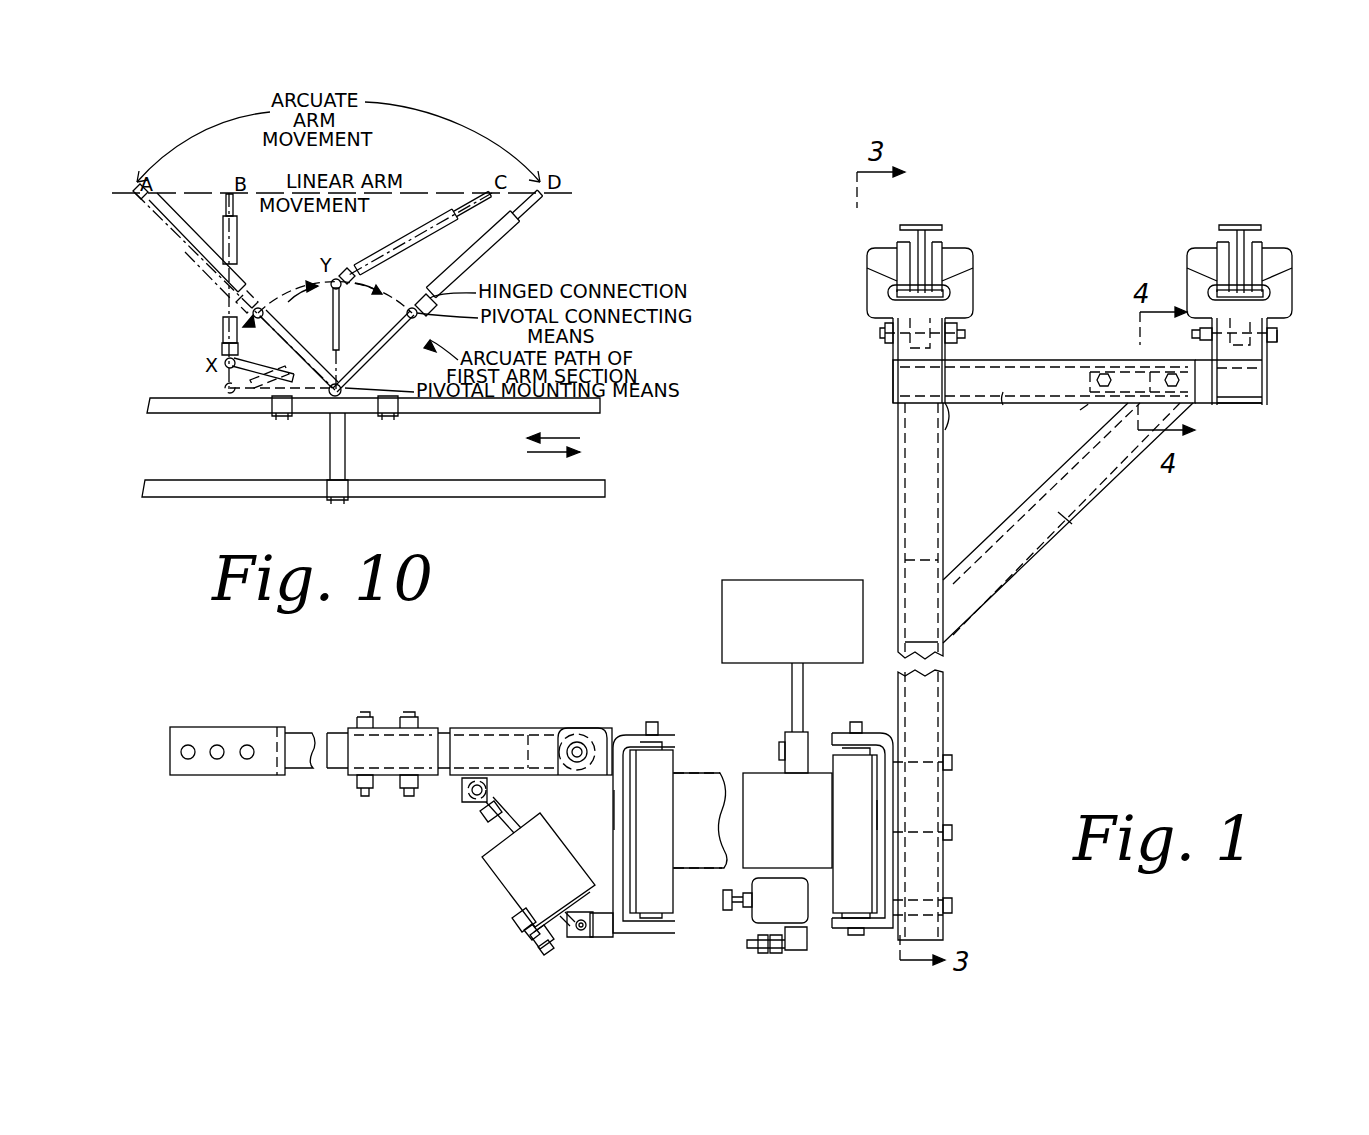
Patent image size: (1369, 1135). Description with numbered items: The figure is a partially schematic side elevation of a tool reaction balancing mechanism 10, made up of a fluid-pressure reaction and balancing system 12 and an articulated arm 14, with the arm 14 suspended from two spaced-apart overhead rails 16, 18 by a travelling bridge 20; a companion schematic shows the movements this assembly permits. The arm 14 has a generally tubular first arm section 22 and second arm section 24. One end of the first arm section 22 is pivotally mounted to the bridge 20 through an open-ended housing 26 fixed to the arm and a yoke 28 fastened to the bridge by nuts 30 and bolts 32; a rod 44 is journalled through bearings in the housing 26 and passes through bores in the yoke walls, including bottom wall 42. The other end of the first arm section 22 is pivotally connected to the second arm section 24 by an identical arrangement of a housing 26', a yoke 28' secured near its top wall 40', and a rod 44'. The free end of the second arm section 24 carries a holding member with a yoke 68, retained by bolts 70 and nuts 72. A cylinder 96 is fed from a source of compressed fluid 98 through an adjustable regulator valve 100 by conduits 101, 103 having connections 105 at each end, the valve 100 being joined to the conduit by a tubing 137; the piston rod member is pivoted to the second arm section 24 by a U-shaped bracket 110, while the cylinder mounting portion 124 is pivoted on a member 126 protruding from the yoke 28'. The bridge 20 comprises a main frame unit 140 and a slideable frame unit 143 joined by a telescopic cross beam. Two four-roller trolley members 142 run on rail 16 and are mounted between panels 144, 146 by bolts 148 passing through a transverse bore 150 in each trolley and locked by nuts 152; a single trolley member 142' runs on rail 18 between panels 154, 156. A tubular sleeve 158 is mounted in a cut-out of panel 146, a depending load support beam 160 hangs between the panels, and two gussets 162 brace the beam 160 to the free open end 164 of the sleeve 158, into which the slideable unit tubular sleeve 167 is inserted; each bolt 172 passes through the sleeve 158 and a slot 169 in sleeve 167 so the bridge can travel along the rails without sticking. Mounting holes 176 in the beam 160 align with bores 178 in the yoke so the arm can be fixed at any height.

In FIG. 1, the tool reaction balancing mechanism 10 is at (692, 606).
In FIG. 1, the fluid-pressure reaction and balancing system 12 is at (412, 874).
In FIG. 10, the articulated arm 14 is at (155, 233).
In FIG. 1, the articulated arm 14 is at (674, 736).
In FIG. 10, the rail 16 is at (580, 402).
In FIG. 1, the rail 16 is at (930, 225).
In FIG. 10, the rail 18 is at (548, 486).
In FIG. 1, the rail 18 is at (1232, 225).
In FIG. 1, the travelling bridge 20 is at (1010, 599).
In FIG. 10, the first arm section 22 is at (322, 340).
In FIG. 1, the first arm section 22 is at (700, 775).
In FIG. 10, the second arm section 24 is at (185, 252).
In FIG. 1, the second arm section 24 is at (505, 728).
In FIG. 1, the housing 26 is at (818, 841).
In FIG. 1, the housing 26' is at (674, 830).
In FIG. 1, the clevis or yoke 28 is at (828, 809).
In FIG. 1, the clevis or yoke 28' is at (583, 808).
In FIG. 1, the nuts 30 is at (945, 892).
In FIG. 1, the bolts 32 is at (955, 762).
In FIG. 1, the top wall 40' is at (627, 801).
In FIG. 1, the bottom wall 42 is at (880, 930).
In FIG. 1, the rod 44 is at (864, 704).
In FIG. 1, the rod 44' is at (648, 692).
In FIG. 1, the yoke 68 is at (252, 732).
In FIG. 1, the bolts 70 is at (408, 717).
In FIG. 1, the nuts 72 is at (400, 790).
In FIG. 1, the cylinder 96 is at (502, 865).
In FIG. 1, the source of compressed fluid 98 is at (810, 588).
In FIG. 1, the adjustable regulator valve 100 is at (760, 918).
In FIG. 1, the conduit 101 is at (792, 684).
In FIG. 1, the conduit 103 is at (528, 950).
In FIG. 1, the connections 105 is at (512, 921).
In FIG. 1, the U-shaped bracket 110 is at (463, 805).
In FIG. 1, the mounting portion 124 is at (566, 930).
In FIG. 1, the member 126 is at (605, 932).
In FIG. 1, the tubing 137 is at (786, 735).
In FIG. 1, the main frame unit 140 is at (898, 439).
In FIG. 10, the trolley members 142 is at (372, 508).
In FIG. 1, the trolley members 142 is at (963, 276).
In FIG. 10, the trolley member 142' is at (346, 431).
In FIG. 1, the trolley member 142' is at (1270, 263).
In FIG. 1, the slideable frame unit 143 is at (1296, 346).
In FIG. 10, the panel 144 is at (345, 445).
In FIG. 1, the panel 144 is at (893, 372).
In FIG. 1, the panel 146 is at (953, 403).
In FIG. 1, the bolts 148 is at (885, 335).
In FIG. 1, the transverse bore 150 is at (898, 348).
In FIG. 1, the nuts 152 is at (957, 330).
In FIG. 1, the panel 154 is at (1215, 360).
In FIG. 1, the panel 156 is at (1267, 380).
In FIG. 1, the tubular sleeve 158 is at (1003, 405).
In FIG. 1, the load support beam 160 is at (912, 482).
In FIG. 1, the reinforcing beams or gussets 162 is at (1070, 518).
In FIG. 1, the free open end 164 is at (1198, 405).
In FIG. 1, the tubular sleeve 167 is at (1245, 390).
In FIG. 1, the transverse slots 169 is at (1080, 410).
In FIG. 1, the bolt 172 is at (1106, 373).
In FIG. 1, the mounting holes 176 is at (920, 840).
In FIG. 1, the bores 178 is at (905, 762).